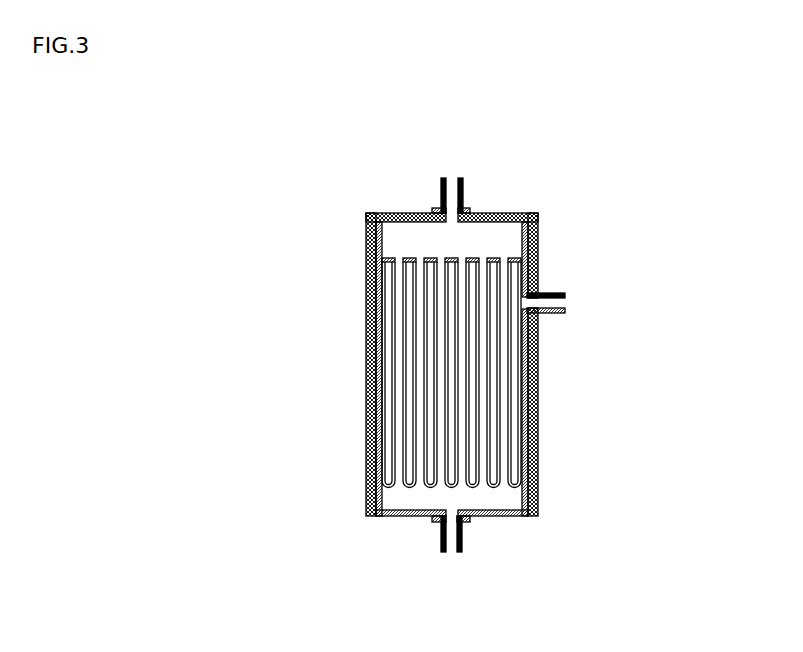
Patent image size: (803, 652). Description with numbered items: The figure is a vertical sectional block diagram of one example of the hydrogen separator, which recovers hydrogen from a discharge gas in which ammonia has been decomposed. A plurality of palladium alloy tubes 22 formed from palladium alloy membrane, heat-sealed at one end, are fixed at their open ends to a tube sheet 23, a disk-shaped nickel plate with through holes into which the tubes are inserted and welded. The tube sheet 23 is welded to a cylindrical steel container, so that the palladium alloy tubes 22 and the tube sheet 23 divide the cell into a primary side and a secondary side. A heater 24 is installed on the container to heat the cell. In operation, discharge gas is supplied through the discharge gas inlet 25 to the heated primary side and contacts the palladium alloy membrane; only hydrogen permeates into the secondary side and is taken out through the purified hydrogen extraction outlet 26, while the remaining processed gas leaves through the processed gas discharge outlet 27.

The palladium alloy tubes 22 is at (394, 291).
The tube sheet 23 is at (488, 258).
The heater 24 is at (366, 352).
The discharge gas inlet 25 is at (455, 524).
The purified hydrogen extraction outlet 26 is at (461, 182).
The processed gas discharge outlet 27 is at (564, 302).